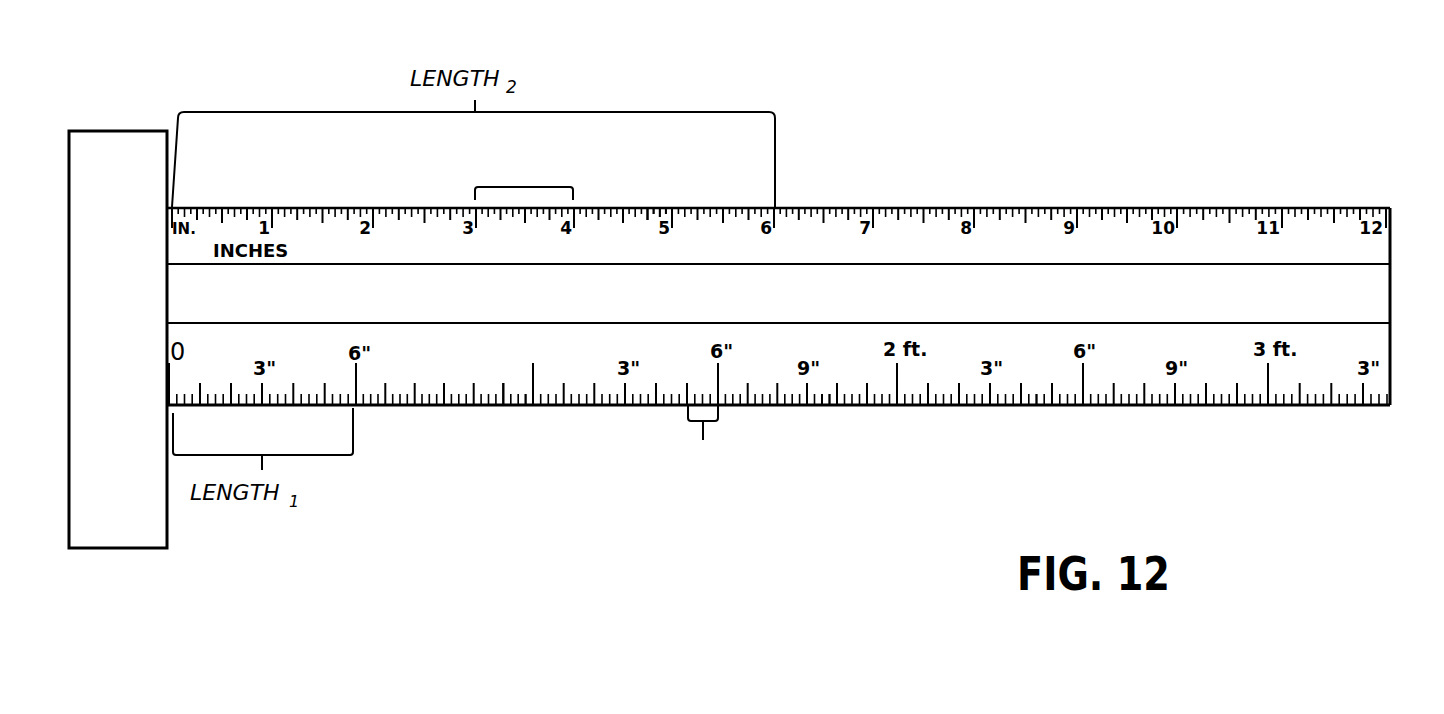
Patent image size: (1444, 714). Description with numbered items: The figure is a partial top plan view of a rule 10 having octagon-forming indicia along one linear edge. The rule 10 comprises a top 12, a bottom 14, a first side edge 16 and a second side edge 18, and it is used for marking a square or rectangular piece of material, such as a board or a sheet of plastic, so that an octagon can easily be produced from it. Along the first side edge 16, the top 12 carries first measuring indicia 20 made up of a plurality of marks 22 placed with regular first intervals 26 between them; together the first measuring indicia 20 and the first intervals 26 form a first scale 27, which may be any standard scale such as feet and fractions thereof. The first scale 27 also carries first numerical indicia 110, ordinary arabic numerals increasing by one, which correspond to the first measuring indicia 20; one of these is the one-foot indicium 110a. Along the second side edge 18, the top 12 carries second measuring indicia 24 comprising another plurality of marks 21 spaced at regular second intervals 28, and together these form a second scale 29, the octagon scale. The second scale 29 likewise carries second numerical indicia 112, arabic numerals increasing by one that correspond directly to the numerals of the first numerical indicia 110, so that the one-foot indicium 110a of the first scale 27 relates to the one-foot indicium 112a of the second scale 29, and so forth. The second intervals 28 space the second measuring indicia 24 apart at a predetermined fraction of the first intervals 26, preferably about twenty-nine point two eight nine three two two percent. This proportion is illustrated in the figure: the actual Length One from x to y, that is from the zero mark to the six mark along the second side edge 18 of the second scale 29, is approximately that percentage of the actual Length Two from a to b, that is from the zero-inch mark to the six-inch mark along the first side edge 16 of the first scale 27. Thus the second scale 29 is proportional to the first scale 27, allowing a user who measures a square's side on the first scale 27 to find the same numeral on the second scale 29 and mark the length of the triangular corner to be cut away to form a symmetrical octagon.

The rule 10 is at (735, 62).
The top 12 is at (1185, 293).
The bottom 14 is at (1210, 414).
The first side edge 16 is at (948, 202).
The second side edge 18 is at (894, 418).
The first measuring indicia 20 is at (373, 207).
The marks 21 is at (1082, 408).
The marks 22 is at (673, 207).
The second measuring indicia 24 is at (530, 408).
The first intervals 26 is at (522, 186).
The first scale 27 is at (862, 198).
The second intervals 28 is at (704, 440).
The second scale 29 is at (832, 420).
The first numerical indicia 110 is at (1074, 232).
The 1 foot indicia 110a is at (1344, 257).
The second numerical indicia 112 is at (432, 367).
The 1 ft indicia 112a is at (520, 350).
The point a is at (173, 206).
The point b is at (775, 200).
The point x is at (172, 408).
The point y is at (353, 405).